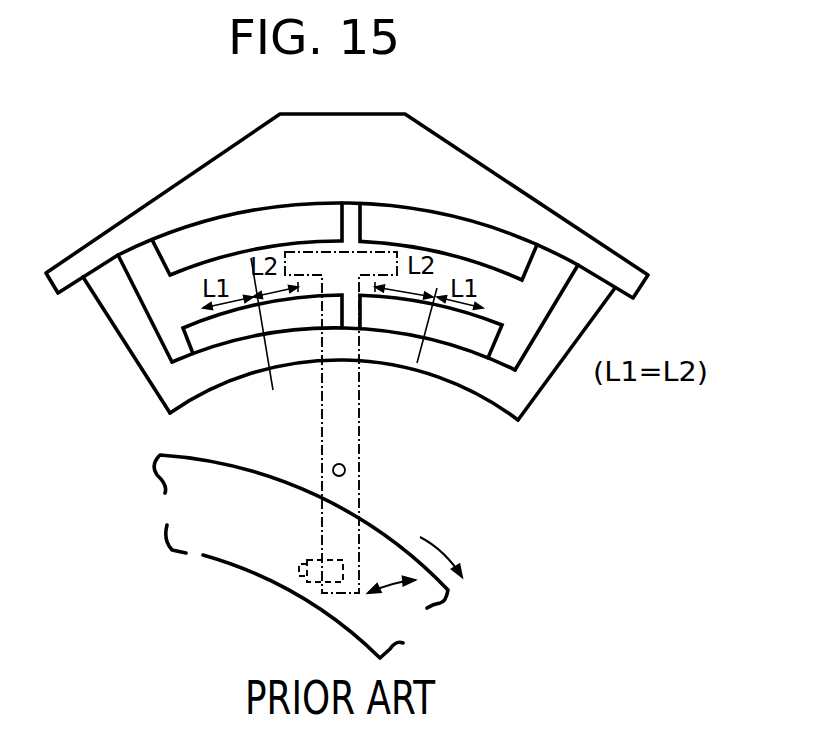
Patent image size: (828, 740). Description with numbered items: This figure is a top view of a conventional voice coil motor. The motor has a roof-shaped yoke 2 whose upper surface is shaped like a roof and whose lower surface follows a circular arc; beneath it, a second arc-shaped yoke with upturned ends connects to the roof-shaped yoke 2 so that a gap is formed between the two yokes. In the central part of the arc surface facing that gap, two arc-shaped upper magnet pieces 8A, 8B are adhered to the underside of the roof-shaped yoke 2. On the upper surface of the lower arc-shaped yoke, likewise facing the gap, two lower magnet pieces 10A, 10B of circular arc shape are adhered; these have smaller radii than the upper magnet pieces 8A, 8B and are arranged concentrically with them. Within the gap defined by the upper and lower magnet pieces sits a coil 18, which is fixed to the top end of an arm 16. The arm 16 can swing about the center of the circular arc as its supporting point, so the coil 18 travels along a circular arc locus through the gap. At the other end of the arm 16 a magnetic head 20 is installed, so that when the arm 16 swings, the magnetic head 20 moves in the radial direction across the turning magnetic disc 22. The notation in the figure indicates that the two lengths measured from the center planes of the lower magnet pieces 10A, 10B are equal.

The roof-shaped yoke 2 is at (533, 213).
The upper magnet piece 8A is at (467, 233).
The upper magnet piece 8B is at (183, 243).
The lower magnet piece 10A is at (440, 337).
The lower magnet piece 10B is at (220, 337).
The arm 16 is at (347, 448).
The coil 18 is at (360, 262).
The magnetic head 20 is at (307, 578).
The magnetic disc 22 is at (242, 547).